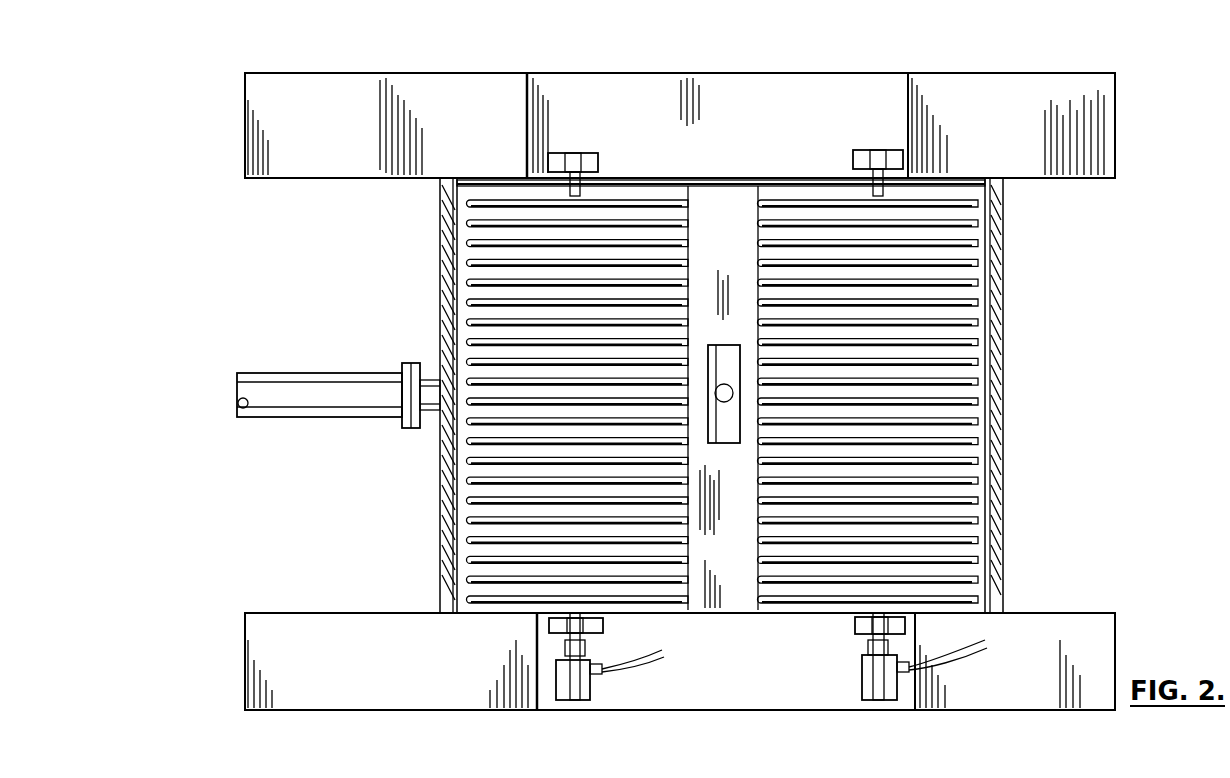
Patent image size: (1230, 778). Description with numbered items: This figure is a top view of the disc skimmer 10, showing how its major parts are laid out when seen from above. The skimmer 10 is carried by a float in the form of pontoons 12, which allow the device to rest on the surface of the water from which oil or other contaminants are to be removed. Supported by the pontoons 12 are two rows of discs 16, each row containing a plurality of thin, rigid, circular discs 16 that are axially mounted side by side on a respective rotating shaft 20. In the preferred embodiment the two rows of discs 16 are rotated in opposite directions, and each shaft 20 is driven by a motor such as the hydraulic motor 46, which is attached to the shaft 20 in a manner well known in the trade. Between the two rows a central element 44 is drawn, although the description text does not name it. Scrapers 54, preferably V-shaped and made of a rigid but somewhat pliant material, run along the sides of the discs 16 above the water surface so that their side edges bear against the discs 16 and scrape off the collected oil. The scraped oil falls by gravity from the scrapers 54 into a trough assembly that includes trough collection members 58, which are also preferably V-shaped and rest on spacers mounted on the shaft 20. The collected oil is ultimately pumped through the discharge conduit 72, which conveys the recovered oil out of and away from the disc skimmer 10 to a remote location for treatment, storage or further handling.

The skimmer 10 is at (262, 543).
The pontoons 12 is at (632, 70).
The discs 16 is at (440, 465).
The rotating shaft 20 is at (573, 152).
The center spacer 44 is at (723, 398).
The hydraulic motor 46 is at (862, 672).
The scrapers 54 is at (440, 192).
The trough collection members 58 is at (805, 190).
The discharge conduit 72 is at (322, 393).